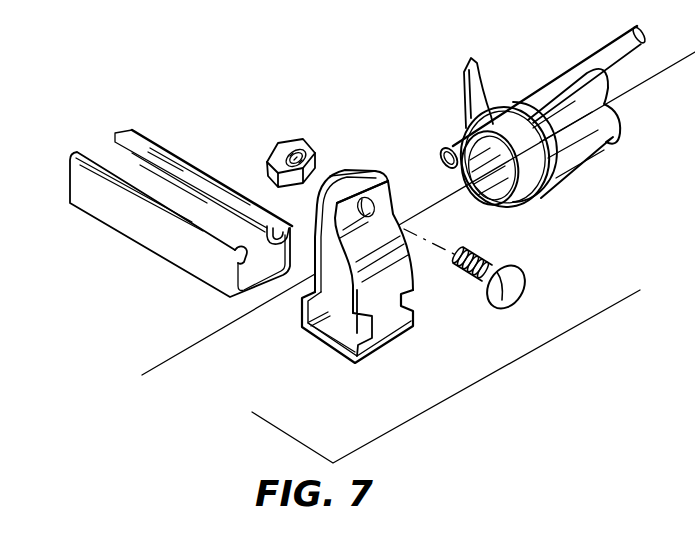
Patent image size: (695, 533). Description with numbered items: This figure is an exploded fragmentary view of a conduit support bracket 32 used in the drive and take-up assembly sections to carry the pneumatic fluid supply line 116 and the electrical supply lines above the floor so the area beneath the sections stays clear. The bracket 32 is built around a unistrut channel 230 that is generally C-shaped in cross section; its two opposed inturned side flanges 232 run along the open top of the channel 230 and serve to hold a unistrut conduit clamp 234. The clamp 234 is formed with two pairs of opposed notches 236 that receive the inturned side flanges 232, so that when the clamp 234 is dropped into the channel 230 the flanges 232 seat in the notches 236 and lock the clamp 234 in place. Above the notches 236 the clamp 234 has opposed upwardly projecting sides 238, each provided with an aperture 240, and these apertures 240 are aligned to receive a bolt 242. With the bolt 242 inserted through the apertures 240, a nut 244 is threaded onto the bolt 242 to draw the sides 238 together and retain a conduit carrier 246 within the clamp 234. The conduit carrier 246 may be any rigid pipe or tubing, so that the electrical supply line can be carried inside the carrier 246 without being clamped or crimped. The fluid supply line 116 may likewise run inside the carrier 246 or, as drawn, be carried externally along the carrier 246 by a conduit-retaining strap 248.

The conduit support bracket 32 is at (179, 143).
The pneumatic fluid supply line 116 is at (593, 60).
The unistrut channel 230 is at (90, 216).
The inturned side flanges 232 is at (268, 236).
The unistrut conduit clamp 234 is at (375, 264).
The opposed notches 236 is at (412, 313).
The upwardly projecting sides 238 is at (386, 182).
The apertures 240 is at (350, 190).
The bolt 242 is at (503, 290).
The nut 244 is at (295, 140).
The conduit carrier 246 is at (596, 157).
The conduit-retaining strap 248 is at (552, 183).